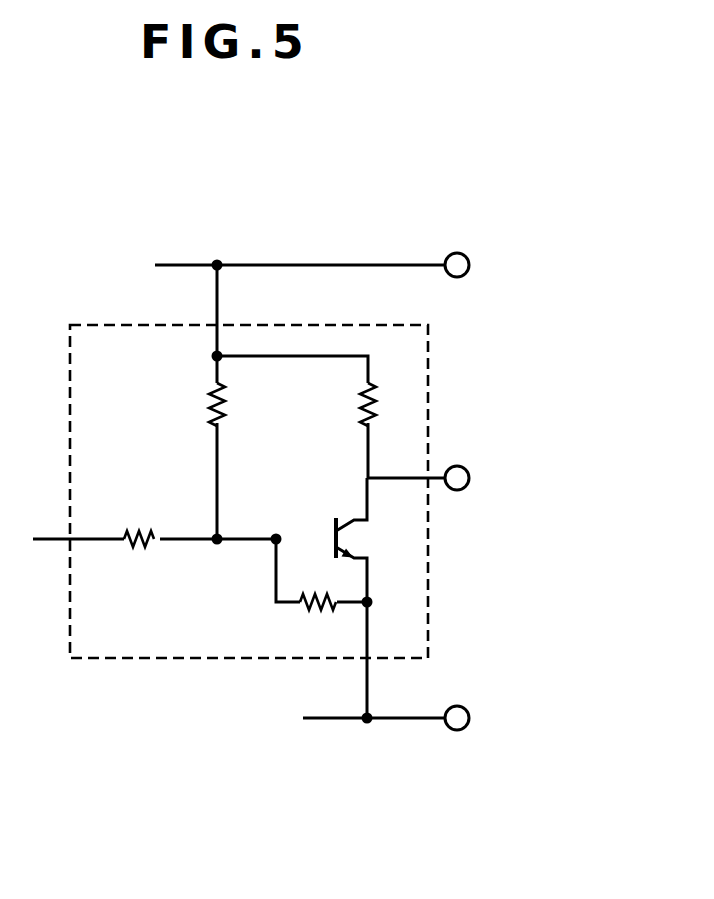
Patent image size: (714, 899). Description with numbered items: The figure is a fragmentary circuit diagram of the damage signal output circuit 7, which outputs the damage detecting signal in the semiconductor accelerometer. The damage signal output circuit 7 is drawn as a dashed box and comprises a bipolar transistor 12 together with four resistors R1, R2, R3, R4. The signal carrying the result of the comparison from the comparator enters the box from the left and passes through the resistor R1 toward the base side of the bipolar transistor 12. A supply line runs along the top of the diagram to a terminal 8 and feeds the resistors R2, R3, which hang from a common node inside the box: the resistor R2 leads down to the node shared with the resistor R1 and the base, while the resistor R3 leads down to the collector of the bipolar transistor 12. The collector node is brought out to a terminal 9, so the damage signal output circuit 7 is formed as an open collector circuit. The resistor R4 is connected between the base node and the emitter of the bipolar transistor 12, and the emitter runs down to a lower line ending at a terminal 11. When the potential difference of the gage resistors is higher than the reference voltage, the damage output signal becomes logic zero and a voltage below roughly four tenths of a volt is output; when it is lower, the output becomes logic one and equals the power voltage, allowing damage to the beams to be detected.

The damage signal output circuit 7 is at (155, 658).
The power supply terminal 8 is at (469, 261).
The output terminal 9 is at (469, 474).
The ground terminal 11 is at (468, 713).
The bipolar transistor 12 is at (362, 540).
The resistor R1 is at (143, 524).
The resistor R2 is at (238, 404).
The resistor R3 is at (388, 404).
The resistor R4 is at (318, 619).